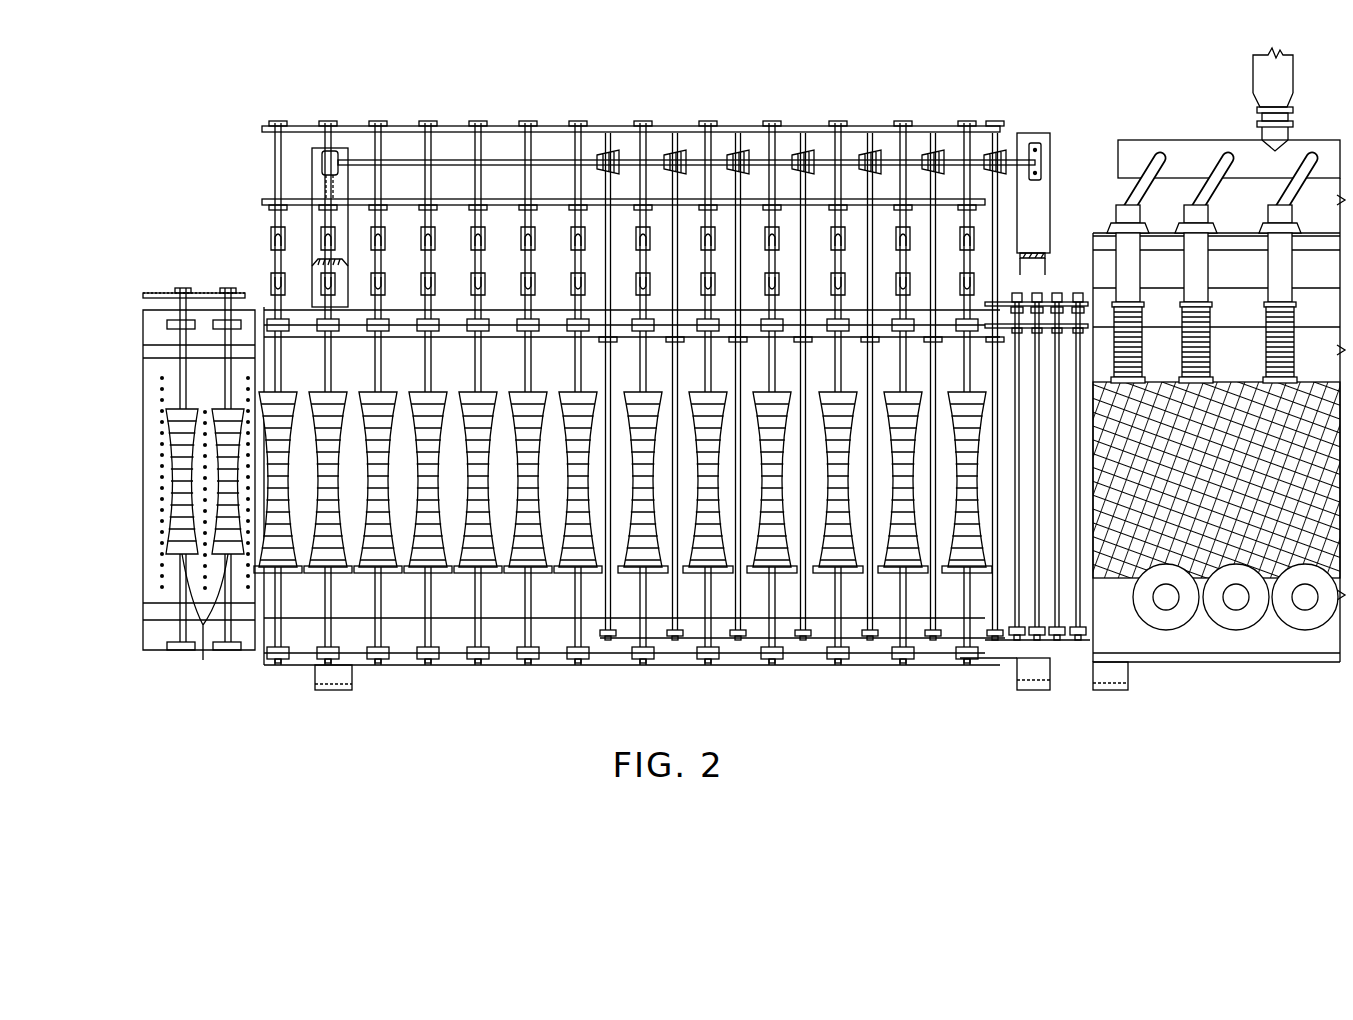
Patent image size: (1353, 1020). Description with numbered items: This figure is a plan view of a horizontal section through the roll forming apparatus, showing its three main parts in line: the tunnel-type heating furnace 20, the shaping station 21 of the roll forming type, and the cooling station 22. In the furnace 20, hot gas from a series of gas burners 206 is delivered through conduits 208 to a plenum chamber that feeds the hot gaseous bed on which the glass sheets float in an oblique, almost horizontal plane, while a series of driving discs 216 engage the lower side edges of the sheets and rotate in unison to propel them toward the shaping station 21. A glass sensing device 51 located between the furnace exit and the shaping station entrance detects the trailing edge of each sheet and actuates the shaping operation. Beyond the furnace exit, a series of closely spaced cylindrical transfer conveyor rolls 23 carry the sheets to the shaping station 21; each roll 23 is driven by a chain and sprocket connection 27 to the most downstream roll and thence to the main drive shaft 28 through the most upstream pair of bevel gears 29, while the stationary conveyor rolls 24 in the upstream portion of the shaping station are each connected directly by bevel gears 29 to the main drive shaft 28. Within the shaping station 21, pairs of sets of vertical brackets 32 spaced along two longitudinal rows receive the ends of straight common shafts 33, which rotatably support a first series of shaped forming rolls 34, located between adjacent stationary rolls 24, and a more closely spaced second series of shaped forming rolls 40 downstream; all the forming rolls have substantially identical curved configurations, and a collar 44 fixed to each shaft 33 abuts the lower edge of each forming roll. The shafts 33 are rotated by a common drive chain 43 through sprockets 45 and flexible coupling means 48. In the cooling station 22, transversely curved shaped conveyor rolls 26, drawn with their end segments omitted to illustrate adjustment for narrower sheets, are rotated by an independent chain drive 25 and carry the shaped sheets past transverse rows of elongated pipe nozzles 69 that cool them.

The tunnel-type heating furnace 20 is at (1141, 130).
The shaping station 21 is at (605, 116).
The cooling station 22 is at (190, 268).
The transfer conveyor rolls 23 is at (1072, 330).
The stationary conveyor rolls 24 is at (613, 502).
The independent chain drive 25 is at (205, 292).
The shaped conveyor rolls 26 is at (203, 600).
The chain and sprocket connection 27 is at (1003, 302).
The main drive shaft 28 is at (500, 158).
The bevel gears 29 is at (746, 150).
The vertical brackets 32 is at (388, 331).
The common shafts 33 is at (525, 632).
The first series of shaped forming rolls 34 is at (660, 511).
The second series of shaped forming rolls 40 is at (293, 511).
The common drive chain 43 is at (853, 124).
The collar 44 is at (540, 574).
The sprockets 45 is at (825, 121).
The flexible coupling means 48 is at (531, 290).
The glass sensing device 51 is at (1068, 637).
The elongated pipe nozzles 69 is at (248, 393).
The gas burners 206 is at (1253, 138).
The conduits 208 is at (1160, 270).
The driving discs 216 is at (1238, 629).